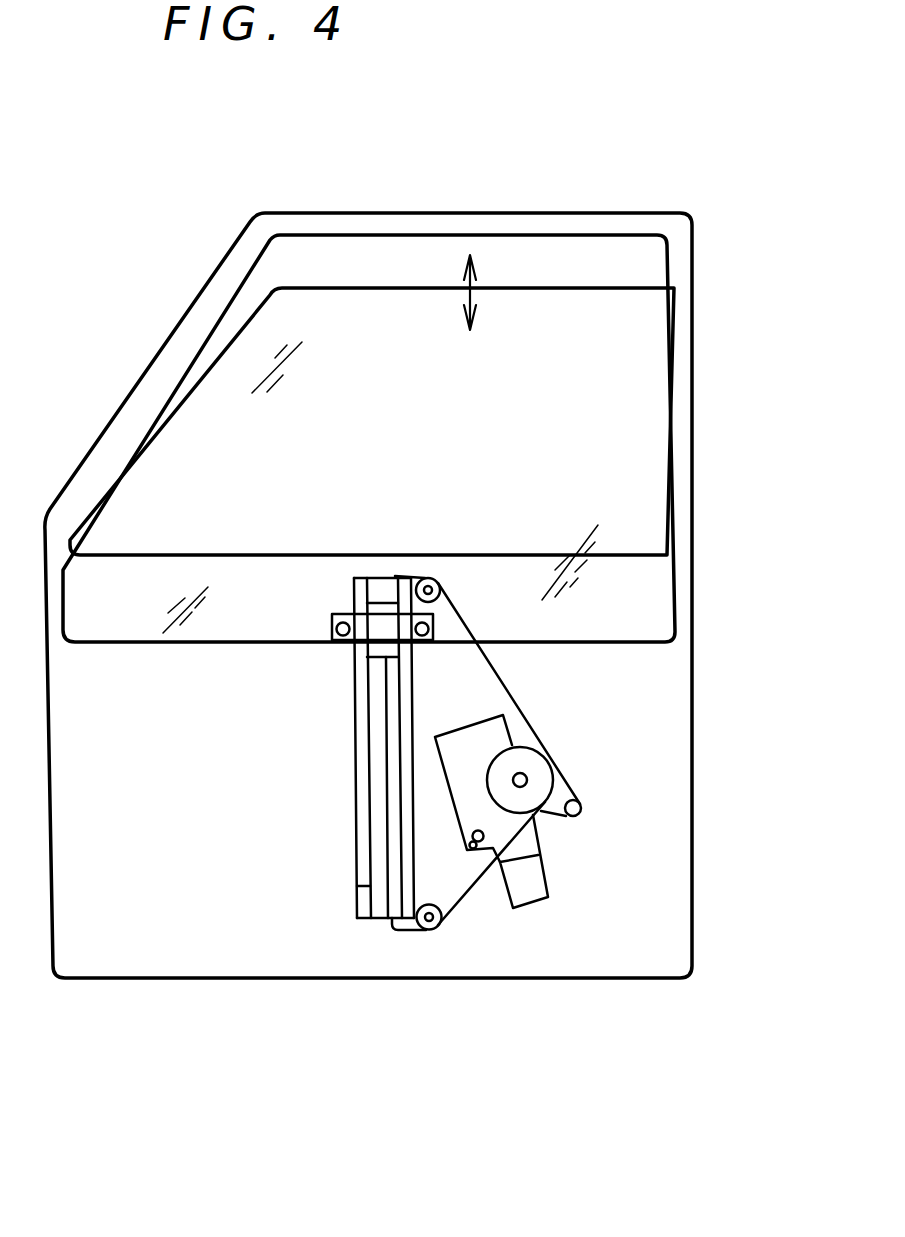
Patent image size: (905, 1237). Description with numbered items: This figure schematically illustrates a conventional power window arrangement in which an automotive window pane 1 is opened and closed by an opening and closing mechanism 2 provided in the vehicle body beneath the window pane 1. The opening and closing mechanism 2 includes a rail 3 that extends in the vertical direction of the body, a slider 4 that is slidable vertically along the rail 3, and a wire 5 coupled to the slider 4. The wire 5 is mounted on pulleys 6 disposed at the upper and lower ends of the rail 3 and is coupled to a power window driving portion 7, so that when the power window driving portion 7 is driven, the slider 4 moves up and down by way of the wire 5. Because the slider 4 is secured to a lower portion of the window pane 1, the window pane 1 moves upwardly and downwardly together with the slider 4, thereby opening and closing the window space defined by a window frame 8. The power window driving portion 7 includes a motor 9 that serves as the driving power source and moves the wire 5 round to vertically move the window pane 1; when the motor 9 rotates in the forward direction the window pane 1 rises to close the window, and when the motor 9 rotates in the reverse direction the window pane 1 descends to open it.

The window pane 1 is at (645, 605).
The opening and closing mechanism 2 is at (593, 803).
The rail 3 is at (353, 893).
The slider 4 is at (372, 627).
The wire 5 is at (463, 897).
The pulleys 6 is at (430, 582).
The power window driving portion 7 is at (533, 837).
The window frame 8 is at (353, 213).
The motor 9 is at (533, 900).